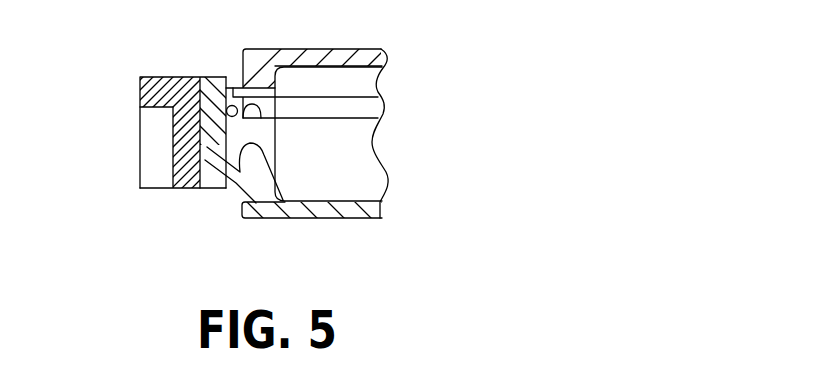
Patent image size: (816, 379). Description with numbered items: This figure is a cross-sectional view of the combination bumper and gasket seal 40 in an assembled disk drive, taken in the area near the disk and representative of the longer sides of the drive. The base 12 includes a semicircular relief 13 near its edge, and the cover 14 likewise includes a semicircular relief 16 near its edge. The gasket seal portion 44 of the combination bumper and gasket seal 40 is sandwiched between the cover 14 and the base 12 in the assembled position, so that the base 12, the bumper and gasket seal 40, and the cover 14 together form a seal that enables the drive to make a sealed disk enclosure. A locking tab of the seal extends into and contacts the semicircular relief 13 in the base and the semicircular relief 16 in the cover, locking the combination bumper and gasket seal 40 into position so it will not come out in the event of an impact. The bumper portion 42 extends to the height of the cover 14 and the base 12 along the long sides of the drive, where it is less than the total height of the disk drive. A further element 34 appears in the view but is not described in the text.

The base 12 is at (386, 203).
The semicircular relief 13 is at (268, 190).
The cover 14 is at (388, 57).
The semicircular relief 16 is at (229, 109).
The flange 34 is at (380, 106).
The combination bumper and gasket seal 40 is at (155, 158).
The bumper portion 42 is at (140, 100).
The gasket seal portion 44 is at (203, 188).